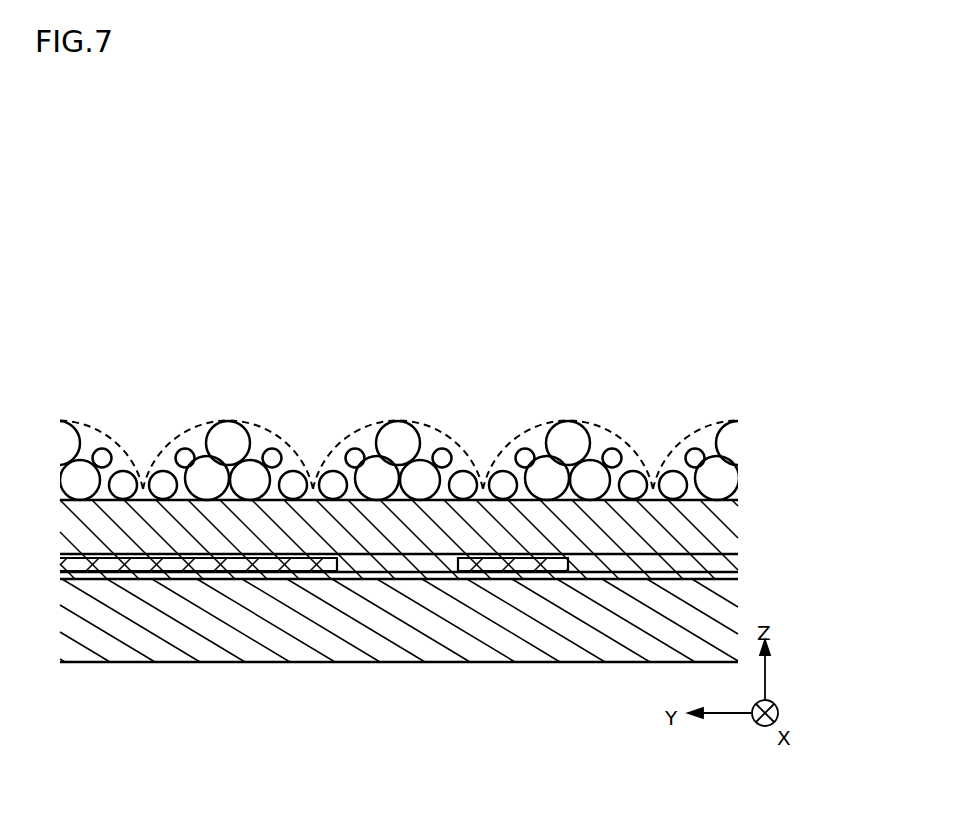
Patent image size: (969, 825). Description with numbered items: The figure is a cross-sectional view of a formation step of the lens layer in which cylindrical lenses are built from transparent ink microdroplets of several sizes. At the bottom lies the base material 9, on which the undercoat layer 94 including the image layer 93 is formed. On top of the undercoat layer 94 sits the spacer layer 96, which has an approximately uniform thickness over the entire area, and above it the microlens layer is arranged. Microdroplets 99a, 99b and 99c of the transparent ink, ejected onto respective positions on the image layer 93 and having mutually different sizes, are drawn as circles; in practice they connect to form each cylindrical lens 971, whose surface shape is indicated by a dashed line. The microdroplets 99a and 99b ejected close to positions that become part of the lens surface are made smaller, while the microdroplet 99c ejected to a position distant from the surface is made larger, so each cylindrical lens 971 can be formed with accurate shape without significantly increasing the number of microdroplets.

The base material 9 is at (308, 633).
The image layer 93 is at (117, 560).
The undercoat layer 94 is at (402, 565).
The spacer layer 96 is at (368, 533).
The cylindrical lens 971 is at (210, 420).
The microdroplet 99a is at (183, 457).
The microdroplet 99b is at (295, 483).
The microdroplet 99c is at (253, 473).